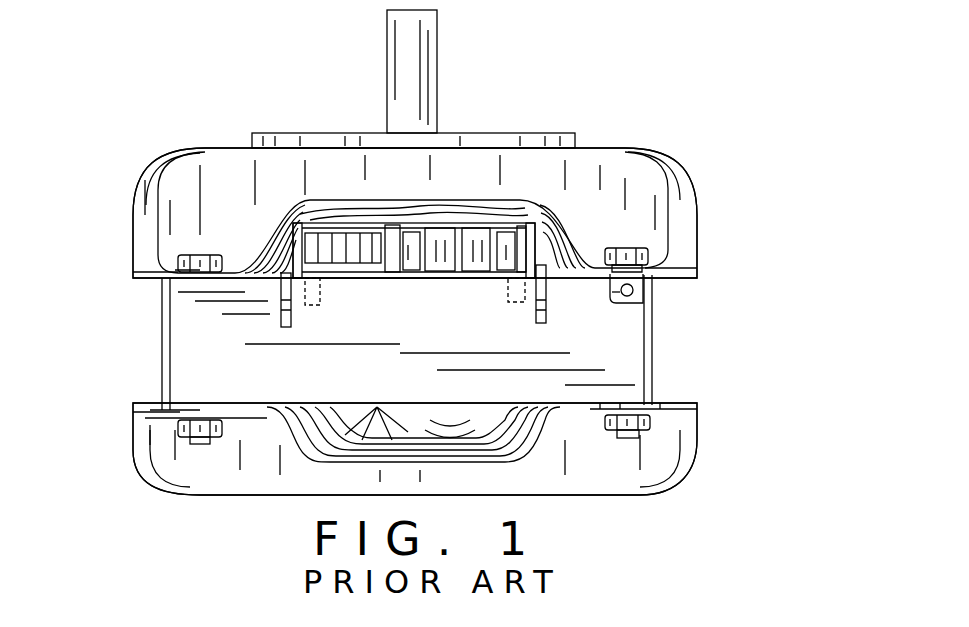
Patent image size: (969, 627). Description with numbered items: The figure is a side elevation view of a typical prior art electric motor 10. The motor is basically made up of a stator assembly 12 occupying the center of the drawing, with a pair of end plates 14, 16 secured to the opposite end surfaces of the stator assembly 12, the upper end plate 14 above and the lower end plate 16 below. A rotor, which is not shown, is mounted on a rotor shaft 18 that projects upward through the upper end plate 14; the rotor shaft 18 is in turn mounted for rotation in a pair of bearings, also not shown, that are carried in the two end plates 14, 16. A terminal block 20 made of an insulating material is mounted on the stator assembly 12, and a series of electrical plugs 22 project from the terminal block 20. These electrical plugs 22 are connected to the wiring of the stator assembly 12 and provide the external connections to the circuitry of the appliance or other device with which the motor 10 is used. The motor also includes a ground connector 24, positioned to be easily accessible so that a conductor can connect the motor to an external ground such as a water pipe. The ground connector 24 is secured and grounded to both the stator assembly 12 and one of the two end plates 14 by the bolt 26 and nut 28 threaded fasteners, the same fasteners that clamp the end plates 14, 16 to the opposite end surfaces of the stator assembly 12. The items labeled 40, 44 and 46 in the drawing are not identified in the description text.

The electric motor 10 is at (615, 112).
The stator assembly 12 is at (610, 373).
The end plate 14 is at (633, 173).
The end plate 16 is at (658, 460).
The rotor shaft 18 is at (428, 66).
The terminal block 20 is at (335, 235).
The electrical plugs 22 is at (313, 247).
The ground connector 24 is at (645, 298).
The bolt 26 is at (630, 250).
The nut 28 is at (656, 437).
The gasket seal 40 is at (175, 272).
The lead wires 44 is at (313, 305).
The bracket hole 46 is at (636, 308).